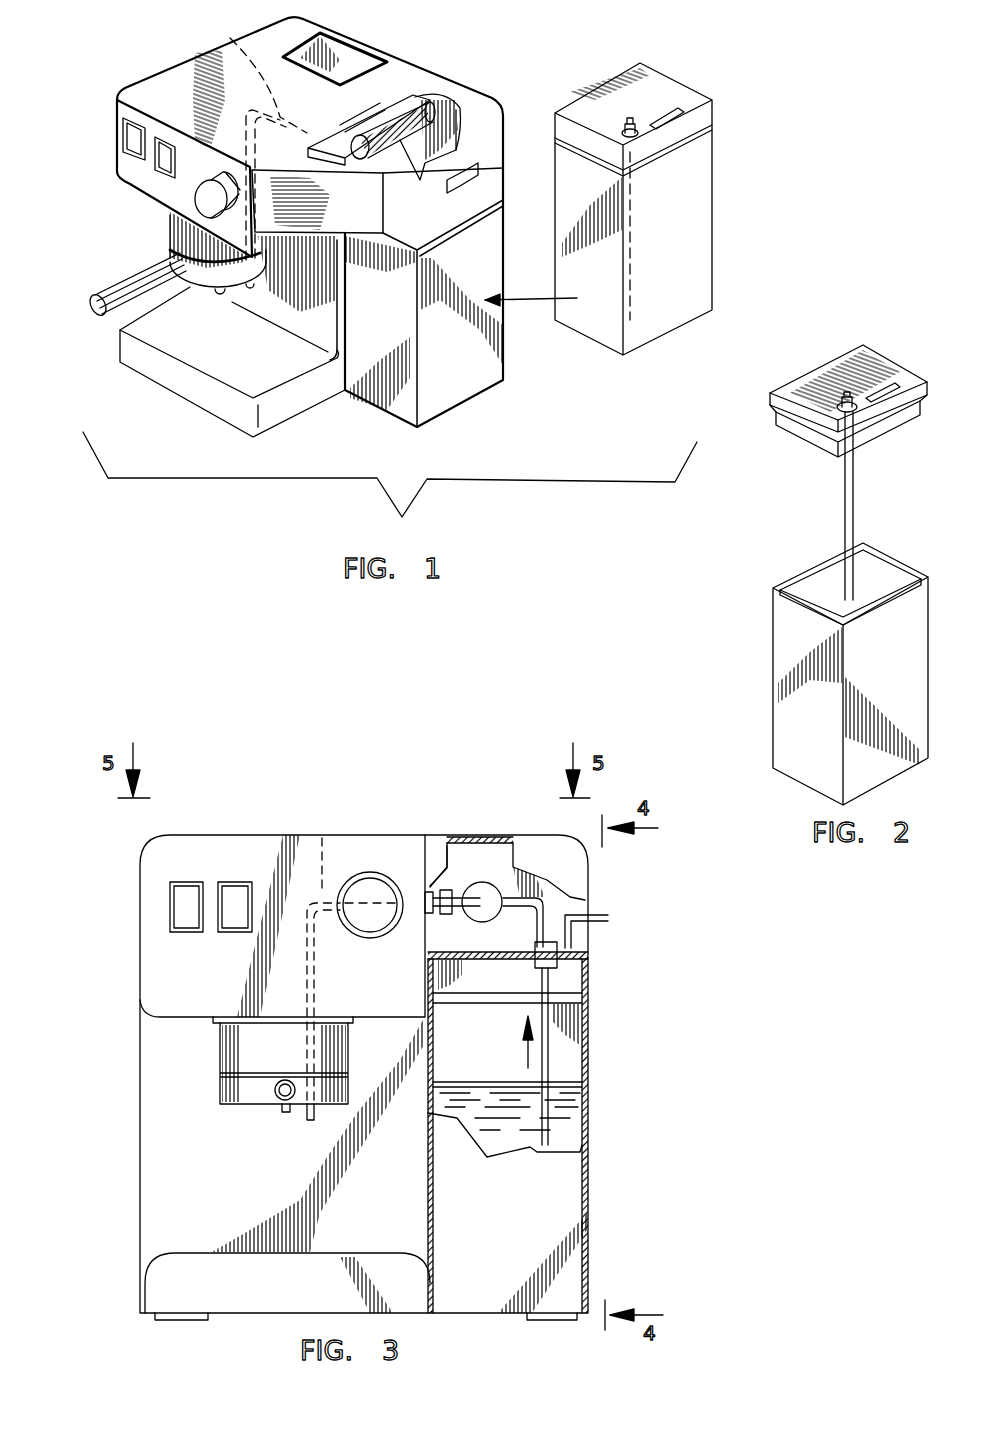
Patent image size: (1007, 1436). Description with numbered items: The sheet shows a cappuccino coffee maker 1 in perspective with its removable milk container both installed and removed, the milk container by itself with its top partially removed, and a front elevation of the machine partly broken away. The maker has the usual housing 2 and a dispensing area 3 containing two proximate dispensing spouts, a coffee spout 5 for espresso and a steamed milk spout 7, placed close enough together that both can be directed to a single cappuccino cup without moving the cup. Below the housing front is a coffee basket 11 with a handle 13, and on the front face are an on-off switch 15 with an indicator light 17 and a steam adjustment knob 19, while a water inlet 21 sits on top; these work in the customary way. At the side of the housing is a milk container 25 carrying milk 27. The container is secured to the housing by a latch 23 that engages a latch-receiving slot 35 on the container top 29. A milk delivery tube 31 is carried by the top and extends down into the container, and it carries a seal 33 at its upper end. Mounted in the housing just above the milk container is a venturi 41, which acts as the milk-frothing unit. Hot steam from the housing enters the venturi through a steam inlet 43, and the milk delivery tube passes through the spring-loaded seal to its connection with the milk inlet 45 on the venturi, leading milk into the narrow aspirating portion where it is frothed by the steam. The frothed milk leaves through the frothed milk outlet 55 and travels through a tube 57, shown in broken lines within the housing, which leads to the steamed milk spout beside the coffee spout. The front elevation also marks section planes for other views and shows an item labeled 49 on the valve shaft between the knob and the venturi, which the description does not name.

In FIG. 1, the cappuccino coffee maker 1 is at (98, 70).
In FIG. 1, the housing 2 is at (172, 78).
In FIG. 1, the dispensing area 3 is at (280, 370).
In FIG. 1, the coffee spout 5 is at (216, 297).
In FIG. 3, the coffee spout 5 is at (282, 1112).
In FIG. 1, the steamed milk spout 7 is at (249, 290).
In FIG. 3, the steamed milk spout 7 is at (308, 1122).
In FIG. 1, the coffee basket 11 is at (173, 237).
In FIG. 3, the coffee basket 11 is at (220, 1078).
In FIG. 1, the handle 13 is at (96, 296).
In FIG. 1, the on-off switch 15 is at (157, 170).
In FIG. 3, the on-off switch 15 is at (222, 882).
In FIG. 1, the indicator light 17 is at (122, 148).
In FIG. 3, the indicator light 17 is at (170, 900).
In FIG. 1, the steam adjustment knob 19 is at (200, 200).
In FIG. 3, the steam adjustment knob 19 is at (370, 872).
In FIG. 1, the water inlet 21 is at (345, 45).
In FIG. 1, the latch 23 is at (480, 180).
In FIG. 3, the latch 23 is at (610, 916).
In FIG. 1, the milk container 25 is at (460, 395).
In FIG. 2, the milk container 25 is at (785, 638).
In FIG. 3, the milk container 25 is at (590, 1038).
In FIG. 3, the milk 27 is at (572, 1120).
In FIG. 1, the container top 29 is at (497, 200).
In FIG. 2, the container top 29 is at (848, 360).
In FIG. 3, the container top 29 is at (590, 978).
In FIG. 1, the milk delivery tube 31 is at (640, 303).
In FIG. 2, the milk delivery tube 31 is at (856, 503).
In FIG. 3, the milk delivery tube 31 is at (552, 1062).
In FIG. 1, the seal 33 is at (633, 118).
In FIG. 2, the seal 33 is at (840, 410).
In FIG. 3, the seal 33 is at (558, 952).
In FIG. 1, the latch-receiving slot 35 is at (683, 110).
In FIG. 2, the latch-receiving slot 35 is at (898, 385).
In FIG. 1, the venturi 41 is at (445, 115).
In FIG. 3, the venturi 41 is at (487, 880).
In FIG. 1, the steam inlet 43 is at (400, 108).
In FIG. 1, the milk inlet 45 is at (460, 118).
In FIG. 3, the milk inlet 45 is at (560, 900).
In FIG. 3, the valve nut 49 is at (443, 890).
In FIG. 3, the frothed milk outlet 55 is at (480, 897).
In FIG. 1, the tube 57 is at (238, 40).
In FIG. 3, the tube 57 is at (324, 838).